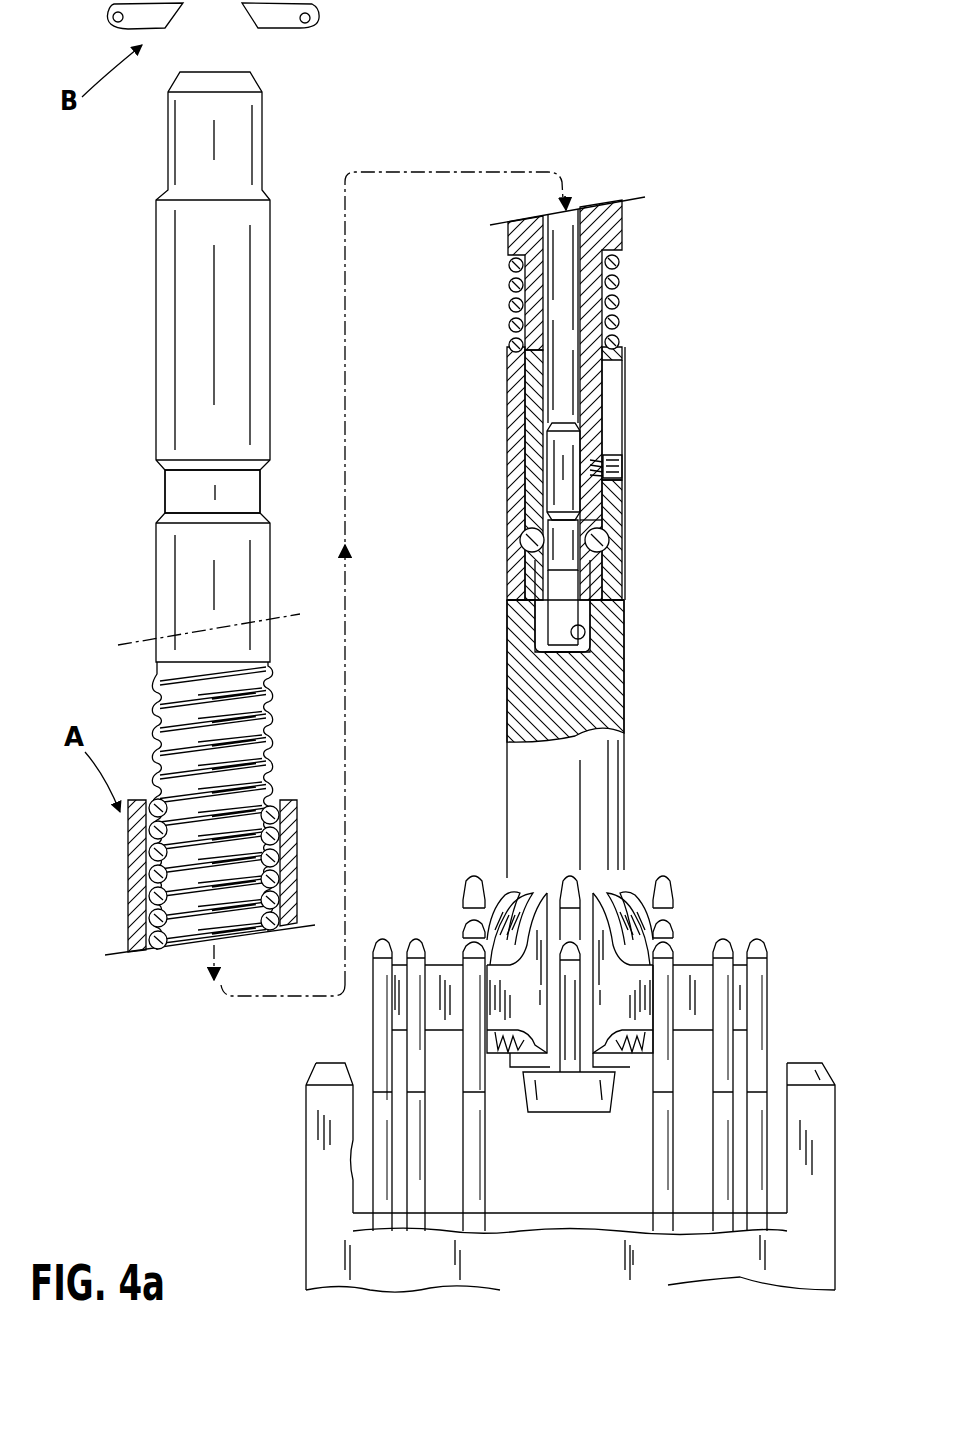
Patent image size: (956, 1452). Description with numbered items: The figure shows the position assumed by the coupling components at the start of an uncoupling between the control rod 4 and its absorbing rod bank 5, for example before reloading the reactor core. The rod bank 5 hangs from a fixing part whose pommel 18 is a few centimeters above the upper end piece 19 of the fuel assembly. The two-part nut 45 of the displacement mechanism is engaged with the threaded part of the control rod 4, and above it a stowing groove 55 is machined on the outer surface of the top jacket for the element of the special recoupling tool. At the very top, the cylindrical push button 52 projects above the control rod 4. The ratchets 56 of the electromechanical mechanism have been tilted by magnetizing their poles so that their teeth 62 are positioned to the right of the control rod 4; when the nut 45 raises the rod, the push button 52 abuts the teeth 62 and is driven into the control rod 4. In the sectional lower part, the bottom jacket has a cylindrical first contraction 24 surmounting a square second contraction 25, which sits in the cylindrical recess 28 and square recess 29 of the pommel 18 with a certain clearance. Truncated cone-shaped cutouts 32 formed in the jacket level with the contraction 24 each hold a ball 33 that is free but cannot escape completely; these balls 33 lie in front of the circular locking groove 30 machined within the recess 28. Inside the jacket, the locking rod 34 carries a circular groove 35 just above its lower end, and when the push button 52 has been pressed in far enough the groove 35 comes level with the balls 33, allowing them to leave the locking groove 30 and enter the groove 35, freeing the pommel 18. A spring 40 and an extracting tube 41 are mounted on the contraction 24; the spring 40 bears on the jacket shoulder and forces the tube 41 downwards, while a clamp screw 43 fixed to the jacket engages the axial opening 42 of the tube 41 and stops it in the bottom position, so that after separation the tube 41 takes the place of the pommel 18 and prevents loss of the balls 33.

The tooth 62 is at (140, 28).
The ratchet 56 is at (282, 35).
The push button 52 is at (185, 150).
The stowing groove 55 is at (163, 470).
The control rod 4 is at (150, 672).
The two-part nut 45 is at (135, 912).
The locking rod 34 is at (561, 252).
The first contraction 24 is at (516, 290).
The spring 40 is at (614, 283).
The extracting tube 41 is at (508, 365).
The axial opening 42 is at (615, 372).
The circular groove 35 is at (550, 445).
The clamp screw 43 is at (622, 462).
The cylindrical recess 28 is at (522, 528).
The ball 33 is at (604, 522).
The locking groove 30 is at (612, 546).
The second contraction 25 is at (535, 620).
The truncated cone-shaped cutout 32 is at (600, 566).
The pommel 18 is at (508, 750).
The square recess 29 is at (562, 655).
The rod bank 5 is at (700, 892).
The upper end piece 19 is at (810, 1067).